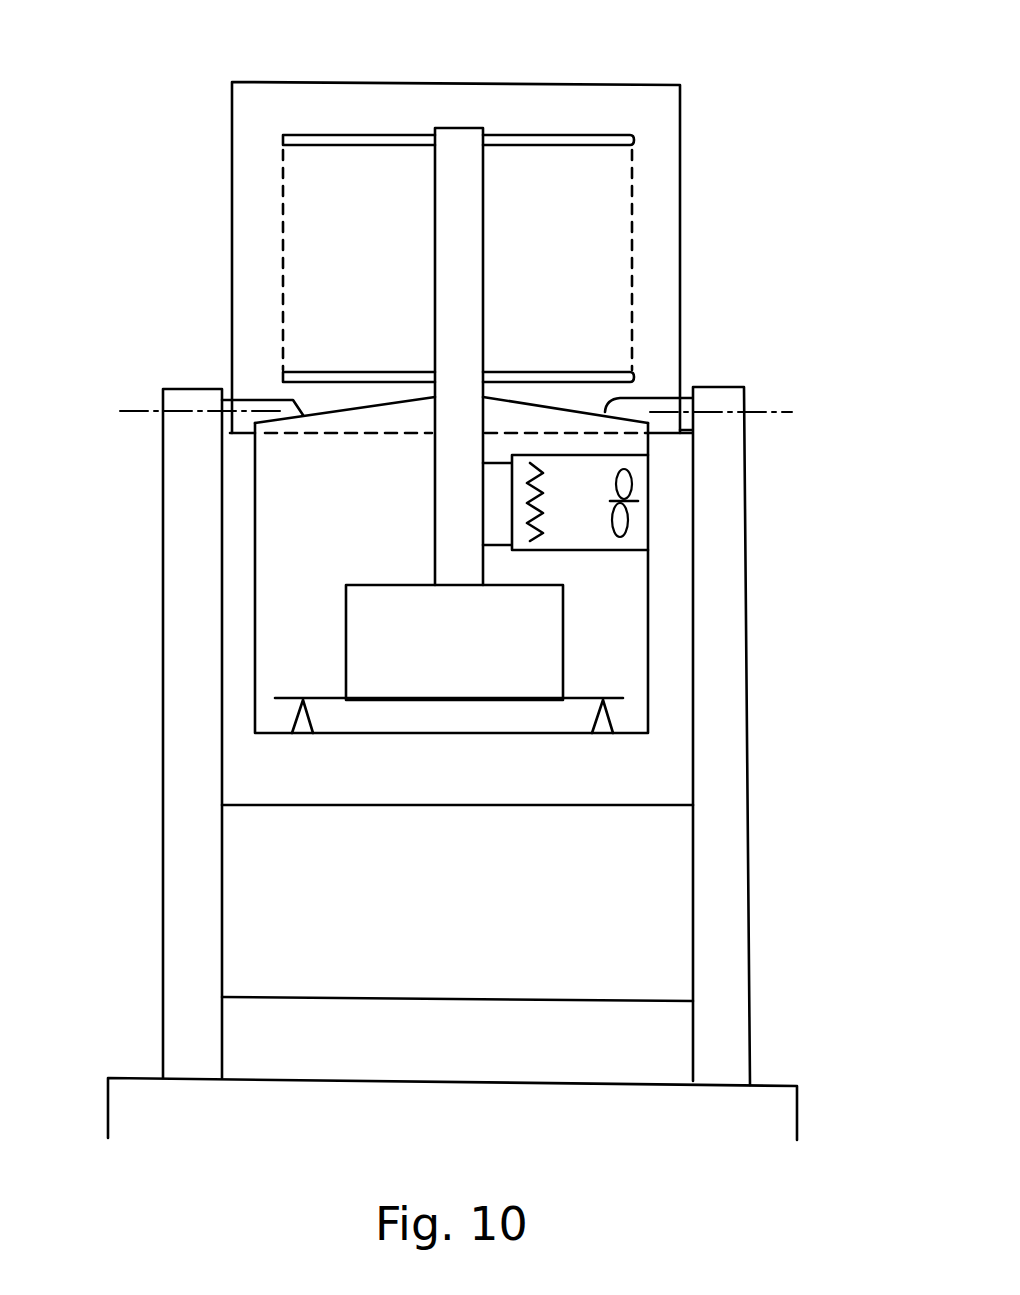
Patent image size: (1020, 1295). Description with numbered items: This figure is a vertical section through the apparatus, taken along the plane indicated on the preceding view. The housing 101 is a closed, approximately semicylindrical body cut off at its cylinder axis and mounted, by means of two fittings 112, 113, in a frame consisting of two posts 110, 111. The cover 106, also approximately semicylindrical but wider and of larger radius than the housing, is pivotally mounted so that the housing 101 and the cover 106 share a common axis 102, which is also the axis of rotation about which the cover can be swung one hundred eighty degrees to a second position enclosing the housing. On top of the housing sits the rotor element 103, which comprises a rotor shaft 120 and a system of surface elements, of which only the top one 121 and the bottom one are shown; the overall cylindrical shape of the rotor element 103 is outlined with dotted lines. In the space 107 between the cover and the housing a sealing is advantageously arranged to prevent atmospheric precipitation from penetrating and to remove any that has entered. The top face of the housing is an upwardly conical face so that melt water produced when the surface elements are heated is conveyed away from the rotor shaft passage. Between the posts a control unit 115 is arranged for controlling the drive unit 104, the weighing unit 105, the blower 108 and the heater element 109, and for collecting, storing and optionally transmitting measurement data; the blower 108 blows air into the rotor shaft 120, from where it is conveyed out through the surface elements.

The housing 101 is at (253, 646).
The common axis 102 is at (773, 412).
The rotor element 103 is at (660, 218).
The drive unit 104 is at (567, 657).
The weighing unit 105 is at (613, 728).
The cover 106 is at (240, 256).
The space between the cover and the housing 107 is at (670, 446).
The blower 108 is at (633, 487).
The heater element 109 is at (555, 530).
The post 110 is at (163, 890).
The post 111 is at (749, 915).
The fitting 112 is at (257, 399).
The fitting 113 is at (653, 395).
The control unit 115 is at (668, 972).
The rotor shaft 120 is at (460, 128).
The top surface element 121 is at (578, 135).